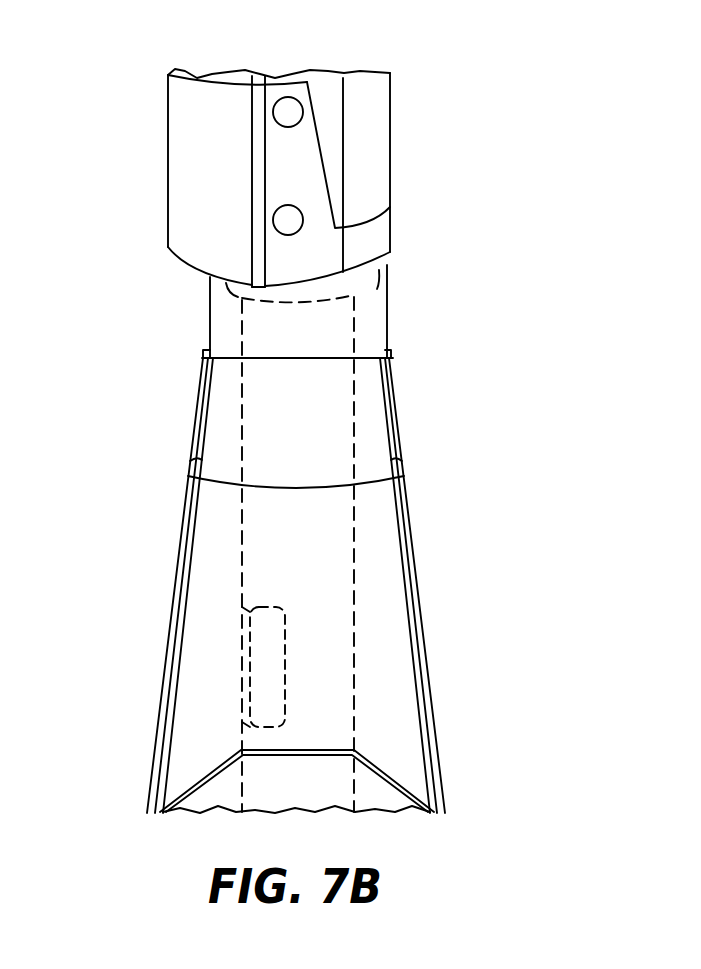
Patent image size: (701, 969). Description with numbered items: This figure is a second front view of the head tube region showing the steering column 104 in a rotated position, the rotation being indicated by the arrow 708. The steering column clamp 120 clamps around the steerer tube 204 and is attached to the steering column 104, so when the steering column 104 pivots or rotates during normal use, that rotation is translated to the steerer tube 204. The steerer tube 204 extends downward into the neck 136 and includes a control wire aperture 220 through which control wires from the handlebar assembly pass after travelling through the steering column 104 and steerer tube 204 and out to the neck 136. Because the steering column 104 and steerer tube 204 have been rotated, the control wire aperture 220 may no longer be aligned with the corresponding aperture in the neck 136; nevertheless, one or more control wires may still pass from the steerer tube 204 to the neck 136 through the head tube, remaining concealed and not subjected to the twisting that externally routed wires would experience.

The rotation of the steering column 708 is at (567, 125).
The steering column 104 is at (375, 173).
The steering column clamp 120 is at (382, 243).
The steerer tube 204 is at (277, 332).
The neck 136 is at (413, 547).
The control wire aperture 220 is at (250, 672).